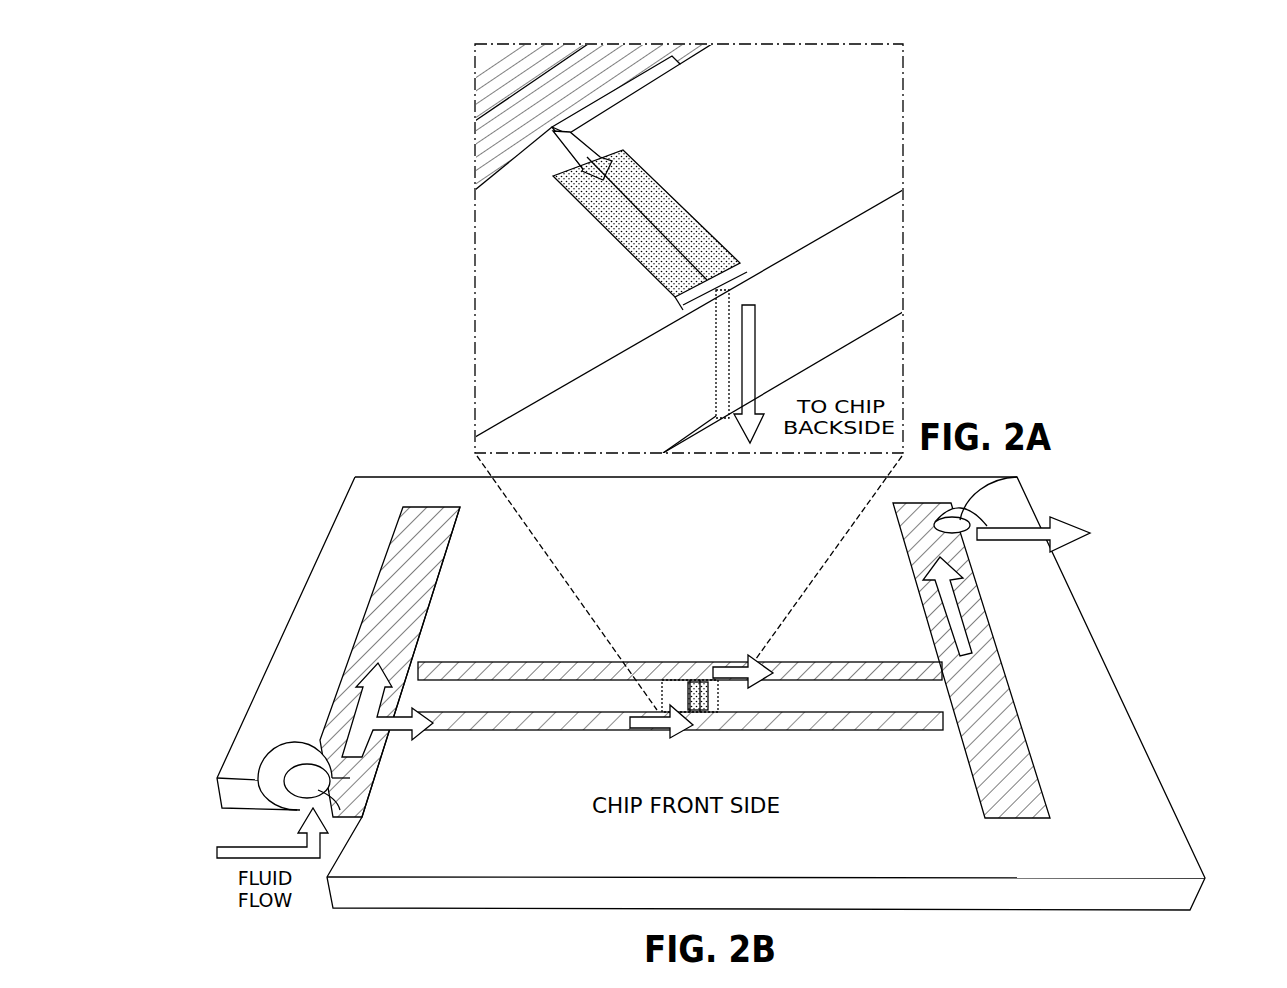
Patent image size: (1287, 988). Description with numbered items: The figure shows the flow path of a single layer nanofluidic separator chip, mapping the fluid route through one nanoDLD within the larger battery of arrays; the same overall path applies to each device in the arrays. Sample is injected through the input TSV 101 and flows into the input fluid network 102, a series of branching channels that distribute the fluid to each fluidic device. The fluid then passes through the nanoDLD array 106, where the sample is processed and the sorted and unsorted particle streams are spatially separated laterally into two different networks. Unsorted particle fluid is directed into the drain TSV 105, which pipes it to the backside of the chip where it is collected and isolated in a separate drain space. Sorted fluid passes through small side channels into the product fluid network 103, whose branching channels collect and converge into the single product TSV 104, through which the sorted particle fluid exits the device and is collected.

In FIG. 2B, the input TSV 101 is at (300, 805).
In FIG. 2A, the input fluid network 102 is at (593, 117).
In FIG. 2B, the input fluid network 102 is at (393, 603).
In FIG. 2B, the product fluid network 103 is at (1017, 758).
In FIG. 2B, the product TSV 104 is at (958, 522).
In FIG. 2A, the drain TSV 105 is at (723, 323).
In FIG. 2A, the nanoDLD array 106 is at (681, 230).
In FIG. 2B, the nanoDLD array 106 is at (690, 696).